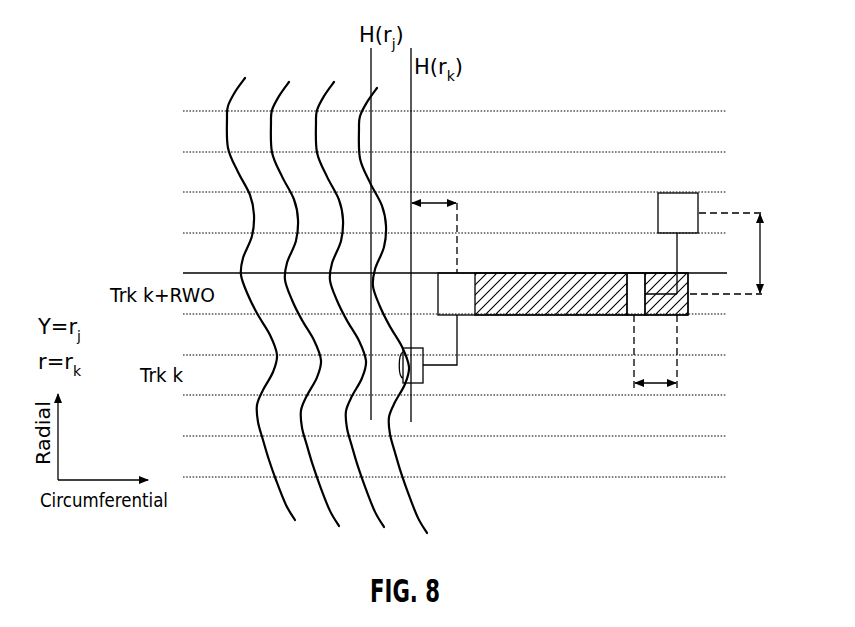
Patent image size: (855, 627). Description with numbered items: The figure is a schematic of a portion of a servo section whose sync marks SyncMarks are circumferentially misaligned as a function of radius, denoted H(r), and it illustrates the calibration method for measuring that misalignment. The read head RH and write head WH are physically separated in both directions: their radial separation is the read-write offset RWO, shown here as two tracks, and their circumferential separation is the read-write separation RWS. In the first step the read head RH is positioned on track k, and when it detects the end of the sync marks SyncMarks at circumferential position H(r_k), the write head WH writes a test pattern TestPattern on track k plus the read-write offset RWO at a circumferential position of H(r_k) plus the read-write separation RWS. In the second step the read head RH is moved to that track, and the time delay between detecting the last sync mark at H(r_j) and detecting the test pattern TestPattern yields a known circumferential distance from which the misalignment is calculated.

The sync marks SyncMarks is at (378, 74).
The test pattern TestPattern is at (540, 268).
The write head WH is at (684, 196).
The read head RH is at (636, 272).
The read-write offset RWO is at (764, 254).
The read-write separation RWS is at (452, 185).